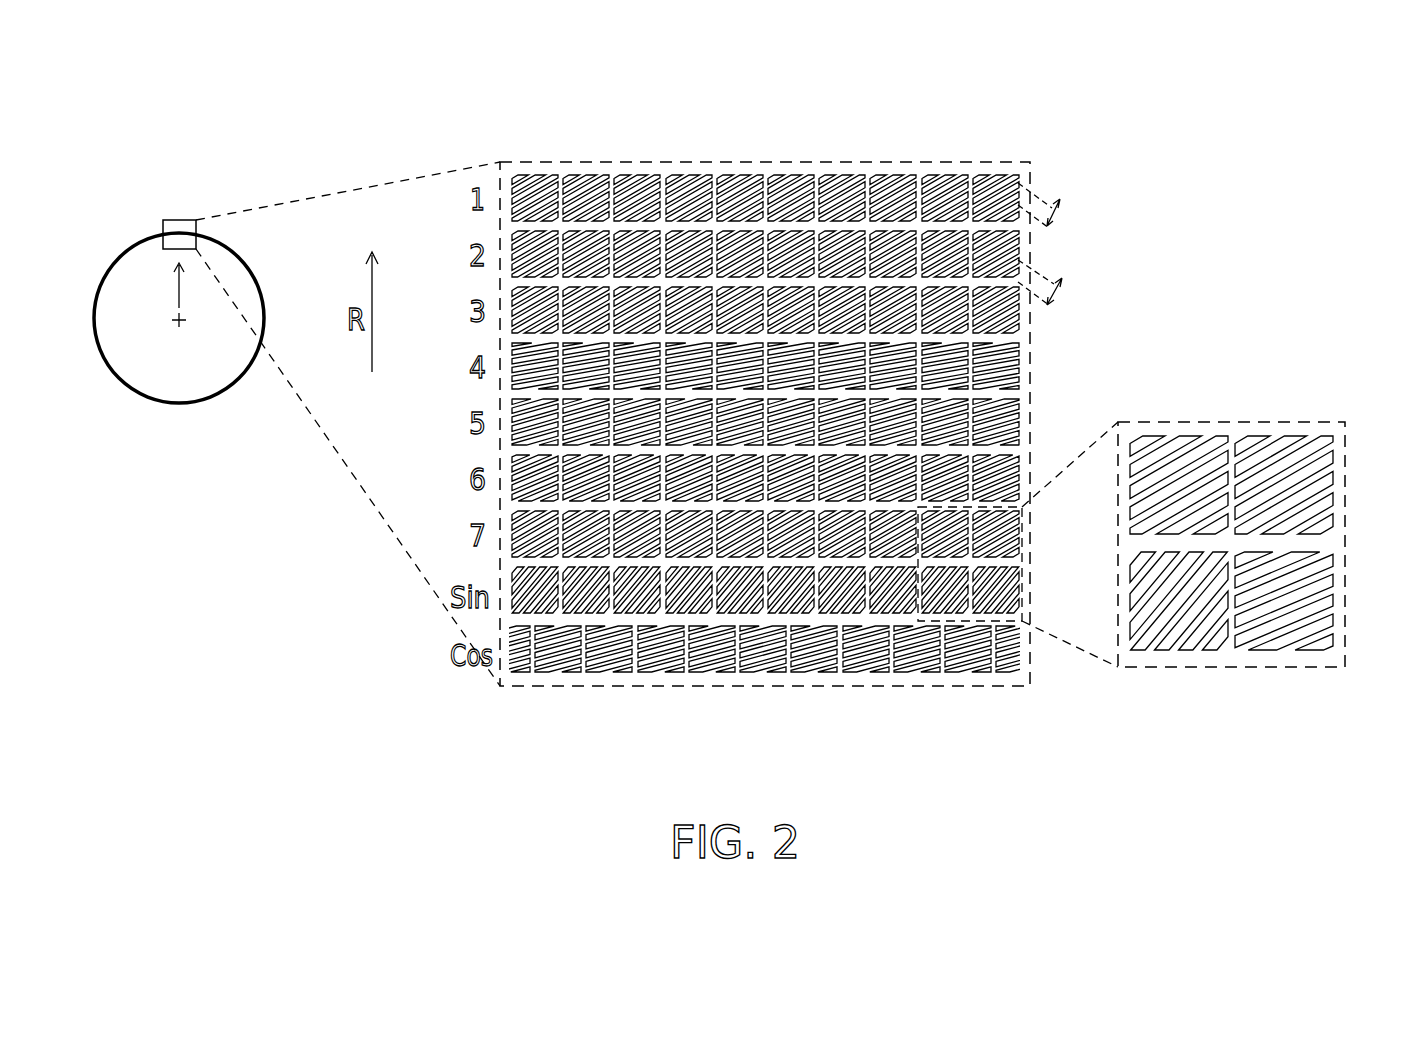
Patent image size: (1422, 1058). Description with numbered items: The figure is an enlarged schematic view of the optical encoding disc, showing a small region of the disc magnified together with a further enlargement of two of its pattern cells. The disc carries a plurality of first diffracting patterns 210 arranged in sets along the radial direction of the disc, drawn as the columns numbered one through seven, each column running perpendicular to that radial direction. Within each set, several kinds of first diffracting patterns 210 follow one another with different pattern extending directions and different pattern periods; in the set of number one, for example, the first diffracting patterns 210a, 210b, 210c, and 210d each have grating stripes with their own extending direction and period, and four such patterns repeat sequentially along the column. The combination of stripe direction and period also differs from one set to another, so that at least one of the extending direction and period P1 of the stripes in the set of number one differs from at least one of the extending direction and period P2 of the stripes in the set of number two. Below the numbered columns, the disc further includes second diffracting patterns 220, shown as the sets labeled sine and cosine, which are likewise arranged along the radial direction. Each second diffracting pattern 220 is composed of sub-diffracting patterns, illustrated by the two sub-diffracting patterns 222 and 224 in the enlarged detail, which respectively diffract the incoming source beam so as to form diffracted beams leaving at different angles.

The first diffracting patterns 210 is at (940, 175).
The first diffracting pattern 210a is at (535, 175).
The first diffracting pattern 210b is at (583, 175).
The first diffracting pattern 210c is at (642, 175).
The first diffracting pattern 210d is at (683, 175).
The second diffracting patterns 220 is at (185, 388).
The sub-diffracting pattern 222 is at (568, 675).
The sub-diffracting pattern 224 is at (608, 675).
The period P1 is at (1056, 212).
The period P2 is at (1058, 292).